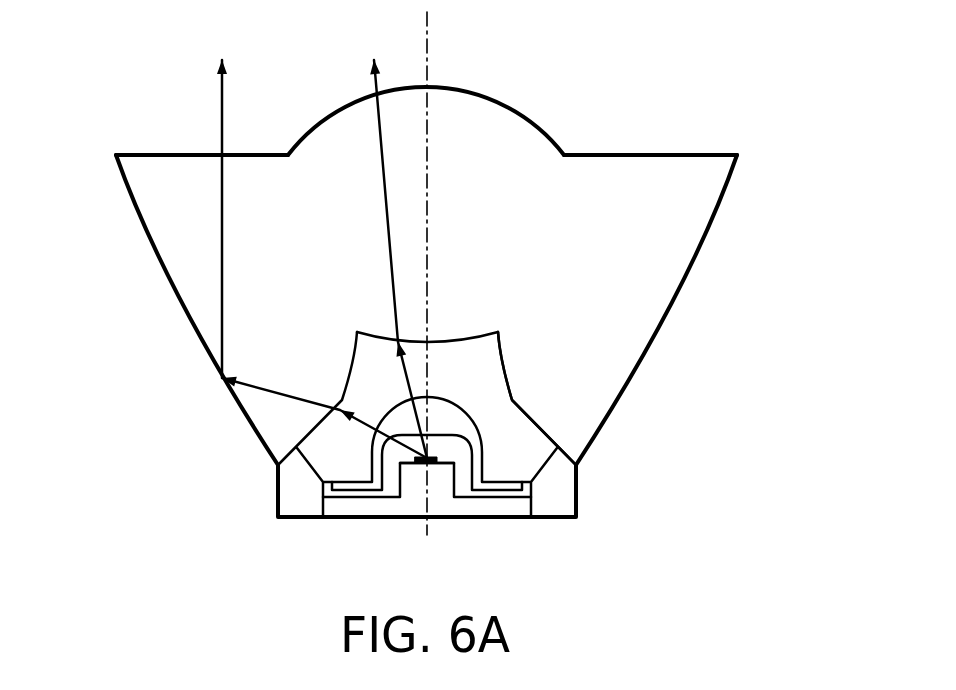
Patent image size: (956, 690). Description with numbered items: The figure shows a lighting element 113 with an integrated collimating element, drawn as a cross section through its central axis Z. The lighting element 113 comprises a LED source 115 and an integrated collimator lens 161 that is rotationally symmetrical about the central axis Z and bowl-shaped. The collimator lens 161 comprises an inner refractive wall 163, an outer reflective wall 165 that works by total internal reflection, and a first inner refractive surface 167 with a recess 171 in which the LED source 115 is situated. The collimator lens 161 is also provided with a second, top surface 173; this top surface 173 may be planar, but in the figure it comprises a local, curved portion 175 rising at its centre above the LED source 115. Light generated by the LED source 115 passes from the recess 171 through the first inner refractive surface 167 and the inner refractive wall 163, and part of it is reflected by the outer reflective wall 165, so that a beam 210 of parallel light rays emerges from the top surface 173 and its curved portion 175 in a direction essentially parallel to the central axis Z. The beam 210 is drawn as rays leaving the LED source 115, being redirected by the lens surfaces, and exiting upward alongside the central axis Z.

The lighting element 113 is at (688, 488).
The LED source 115 is at (427, 463).
The collimator lens 161 is at (702, 249).
The inner refractive wall 163 is at (472, 343).
The outer reflective wall 165 is at (177, 298).
The first inner refractive surface 167 is at (350, 365).
The recess 171 is at (512, 425).
The second, top surface 173 is at (645, 155).
The local, curved portion 175 is at (507, 128).
The beam of parallel light rays 210 is at (220, 78).
The central axis Z is at (427, 25).